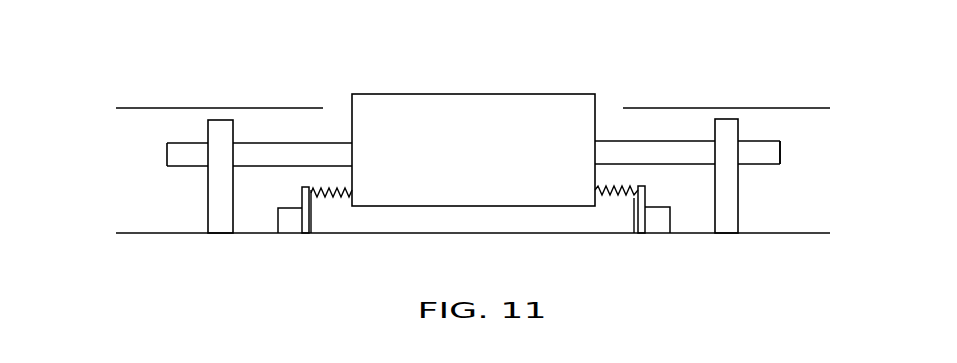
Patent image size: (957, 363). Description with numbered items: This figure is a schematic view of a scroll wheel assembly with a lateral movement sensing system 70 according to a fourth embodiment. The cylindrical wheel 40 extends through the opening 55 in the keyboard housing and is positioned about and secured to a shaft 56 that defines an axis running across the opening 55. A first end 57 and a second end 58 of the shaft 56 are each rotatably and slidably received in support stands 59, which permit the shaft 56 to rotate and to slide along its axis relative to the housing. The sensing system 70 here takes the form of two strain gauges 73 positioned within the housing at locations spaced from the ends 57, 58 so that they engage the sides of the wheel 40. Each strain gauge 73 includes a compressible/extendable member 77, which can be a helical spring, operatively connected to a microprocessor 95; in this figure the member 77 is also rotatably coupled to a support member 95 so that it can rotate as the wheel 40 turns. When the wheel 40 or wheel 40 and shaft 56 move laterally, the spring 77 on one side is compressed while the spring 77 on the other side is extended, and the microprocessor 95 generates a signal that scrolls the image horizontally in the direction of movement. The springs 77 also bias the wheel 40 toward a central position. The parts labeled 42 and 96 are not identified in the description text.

The wheel 40 is at (508, 86).
The end face 42 is at (356, 118).
The opening 55 is at (345, 98).
The shaft 56 is at (663, 141).
The first end 57 is at (167, 155).
The second end 58 is at (780, 152).
The support stand 59 is at (226, 120).
The lateral movement sensing system 70 is at (336, 222).
The strain gauge 73 is at (336, 160).
The compressible/extendable member 77 is at (318, 198).
The microprocessor 95 is at (278, 218).
The spring seat 96 is at (302, 190).